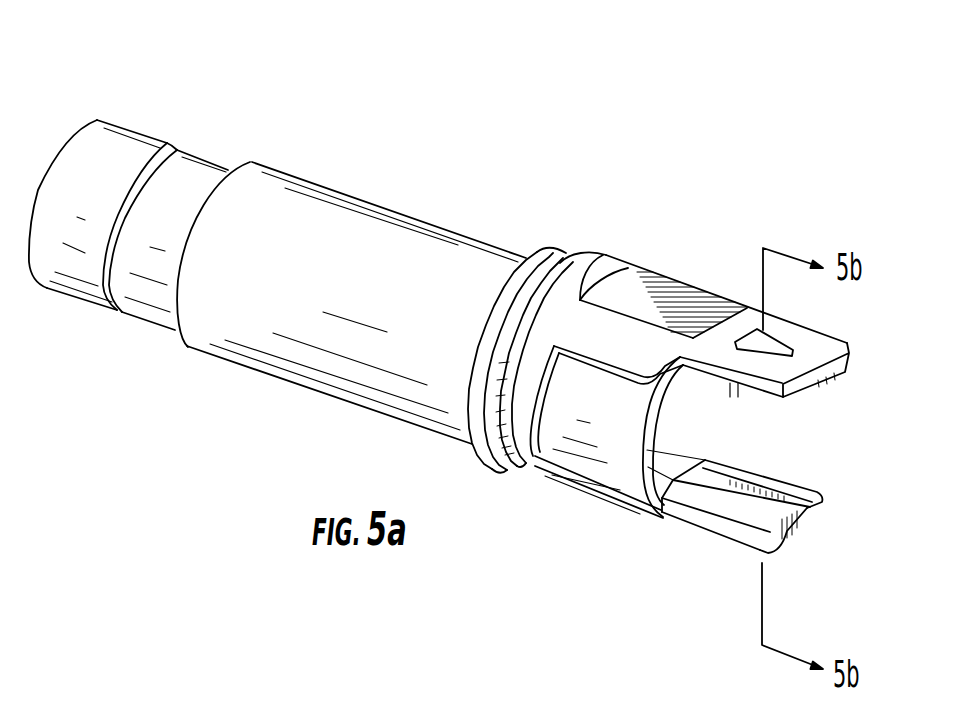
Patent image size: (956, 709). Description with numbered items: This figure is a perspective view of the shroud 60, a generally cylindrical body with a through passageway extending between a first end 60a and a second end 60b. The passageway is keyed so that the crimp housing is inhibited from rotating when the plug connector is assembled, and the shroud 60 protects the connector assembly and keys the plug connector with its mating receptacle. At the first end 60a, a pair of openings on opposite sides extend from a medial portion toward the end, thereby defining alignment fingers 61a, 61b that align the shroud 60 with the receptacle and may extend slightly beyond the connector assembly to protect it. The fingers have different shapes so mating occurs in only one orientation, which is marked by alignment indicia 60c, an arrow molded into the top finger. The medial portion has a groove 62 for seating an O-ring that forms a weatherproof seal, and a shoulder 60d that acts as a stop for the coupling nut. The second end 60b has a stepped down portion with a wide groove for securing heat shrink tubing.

The shroud 60 is at (330, 139).
The first end 60a is at (768, 548).
The second end 60b is at (63, 268).
The alignment indicia 60c is at (757, 330).
The shoulder 60d is at (535, 245).
The alignment finger 61a is at (840, 372).
The alignment finger 61b is at (818, 523).
The groove 62 is at (563, 268).